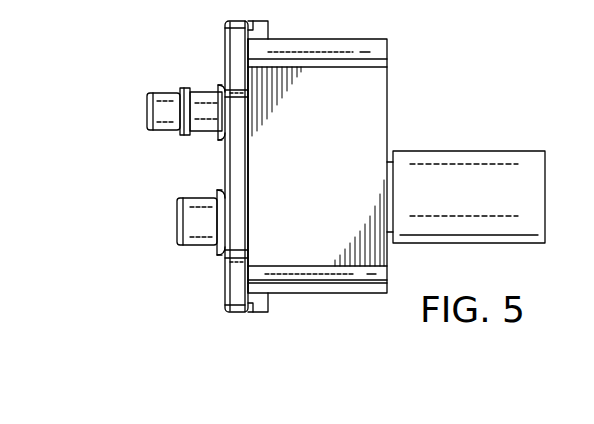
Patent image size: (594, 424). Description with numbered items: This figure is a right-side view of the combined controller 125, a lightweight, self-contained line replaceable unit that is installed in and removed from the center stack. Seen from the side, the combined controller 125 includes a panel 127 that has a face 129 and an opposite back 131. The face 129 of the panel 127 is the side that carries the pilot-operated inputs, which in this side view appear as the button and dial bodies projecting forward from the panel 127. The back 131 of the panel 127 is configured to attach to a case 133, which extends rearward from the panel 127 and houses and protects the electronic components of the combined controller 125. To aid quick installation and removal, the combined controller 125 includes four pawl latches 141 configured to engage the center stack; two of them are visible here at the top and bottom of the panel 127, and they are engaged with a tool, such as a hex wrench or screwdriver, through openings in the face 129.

The combined controller 125 is at (152, 67).
The panel 127 is at (218, 52).
The face 129 is at (225, 168).
The back 131 is at (250, 156).
The case 133 is at (380, 118).
The pawl latches 141 is at (270, 27).